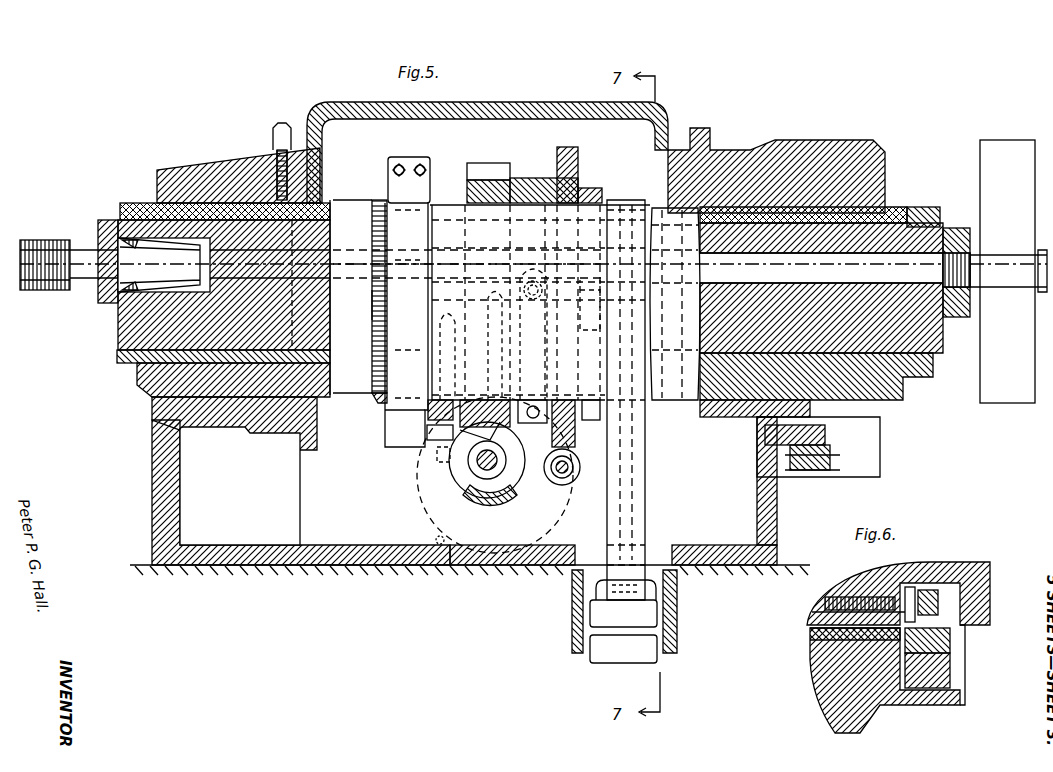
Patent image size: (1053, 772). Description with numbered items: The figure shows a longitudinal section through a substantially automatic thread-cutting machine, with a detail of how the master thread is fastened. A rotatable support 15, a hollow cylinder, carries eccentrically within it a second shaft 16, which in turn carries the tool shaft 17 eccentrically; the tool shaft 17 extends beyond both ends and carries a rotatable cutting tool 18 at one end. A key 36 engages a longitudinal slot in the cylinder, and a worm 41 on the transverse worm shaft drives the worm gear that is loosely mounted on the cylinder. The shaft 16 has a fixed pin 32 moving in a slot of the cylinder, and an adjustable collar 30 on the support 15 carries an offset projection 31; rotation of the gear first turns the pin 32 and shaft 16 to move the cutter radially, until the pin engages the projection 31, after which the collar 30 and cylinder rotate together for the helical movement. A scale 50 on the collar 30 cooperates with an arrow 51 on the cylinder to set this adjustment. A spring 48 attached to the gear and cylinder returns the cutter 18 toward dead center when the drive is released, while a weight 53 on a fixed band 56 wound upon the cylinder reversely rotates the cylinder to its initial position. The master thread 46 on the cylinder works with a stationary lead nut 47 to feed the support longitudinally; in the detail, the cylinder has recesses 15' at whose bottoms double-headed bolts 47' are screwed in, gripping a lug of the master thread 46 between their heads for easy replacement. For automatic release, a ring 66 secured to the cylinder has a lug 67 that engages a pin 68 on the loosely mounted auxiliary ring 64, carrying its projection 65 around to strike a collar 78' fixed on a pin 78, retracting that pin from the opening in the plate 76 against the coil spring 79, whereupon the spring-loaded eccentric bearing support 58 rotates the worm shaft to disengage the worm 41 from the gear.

In FIG. 5, the rotatable support 15 is at (454, 349).
In FIG. 6, the rotatable support 15 is at (898, 640).
In FIG. 6, the recesses 15' is at (964, 599).
In FIG. 5, the second shaft 16 is at (905, 320).
In FIG. 5, the tool shaft 17 is at (533, 271).
In FIG. 5, the rotatable cutting tool 18 is at (48, 290).
In FIG. 5, the adjustable collar 30 is at (407, 302).
In FIG. 5, the offset projection 31 is at (427, 432).
In FIG. 5, the pin 32 is at (434, 459).
In FIG. 5, the key 36 is at (492, 170).
In FIG. 5, the worm 41 is at (480, 465).
In FIG. 6, the master thread 46 is at (935, 668).
In FIG. 6, the lead nut 47 is at (951, 641).
In FIG. 6, the double-headed bolt 47' is at (969, 602).
In FIG. 5, the spring 48 is at (575, 437).
In FIG. 5, the scale 50 is at (375, 328).
In FIG. 5, the arrow 51 is at (364, 307).
In FIG. 5, the weight 53 is at (624, 616).
In FIG. 5, the fixed band 56 is at (626, 400).
In FIG. 5, the rotatable bearing support 58 is at (523, 498).
In FIG. 5, the auxiliary ring 64 is at (570, 180).
In FIG. 5, the projection 65 is at (569, 165).
In FIG. 5, the ring 66 is at (602, 200).
In FIG. 5, the lug 67 is at (590, 324).
In FIG. 5, the pin 68 is at (588, 282).
In FIG. 5, the plate 76 is at (483, 475).
In FIG. 5, the pin 78 is at (610, 461).
In FIG. 5, the collar 78' is at (614, 467).
In FIG. 5, the coil spring 79 is at (575, 473).